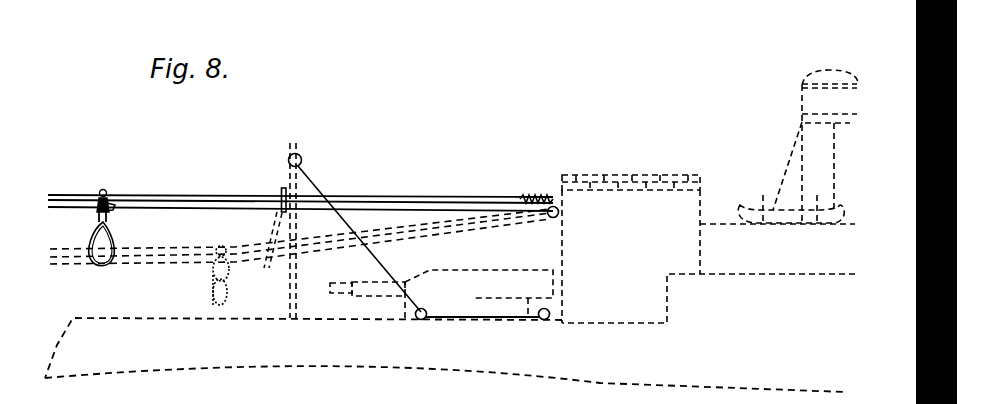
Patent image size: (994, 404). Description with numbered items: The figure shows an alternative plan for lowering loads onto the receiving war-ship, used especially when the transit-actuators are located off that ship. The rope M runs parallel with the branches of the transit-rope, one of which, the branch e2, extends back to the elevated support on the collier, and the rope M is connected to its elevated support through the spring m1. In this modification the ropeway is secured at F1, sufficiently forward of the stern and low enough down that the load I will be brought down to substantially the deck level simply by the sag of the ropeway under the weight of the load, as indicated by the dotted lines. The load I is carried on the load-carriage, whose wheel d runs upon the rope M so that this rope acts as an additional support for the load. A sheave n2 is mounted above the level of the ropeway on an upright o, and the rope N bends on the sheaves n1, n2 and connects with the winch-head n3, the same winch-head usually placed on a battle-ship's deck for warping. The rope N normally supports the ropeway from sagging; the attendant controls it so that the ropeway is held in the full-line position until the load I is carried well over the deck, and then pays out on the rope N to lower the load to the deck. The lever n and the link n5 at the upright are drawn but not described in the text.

The load-carriage wheel d is at (104, 196).
The branch of the transit-rope e2 is at (112, 213).
The load I is at (91, 242).
The rope M is at (390, 195).
The spring m1 is at (523, 197).
The ropeway securing point F1 is at (574, 206).
The lever n is at (282, 186).
The sheave n2 is at (290, 155).
The lever link n5 is at (281, 197).
The upright o is at (302, 230).
The sheave n1 is at (421, 320).
The rope N is at (476, 320).
The winch-head n3 is at (544, 320).